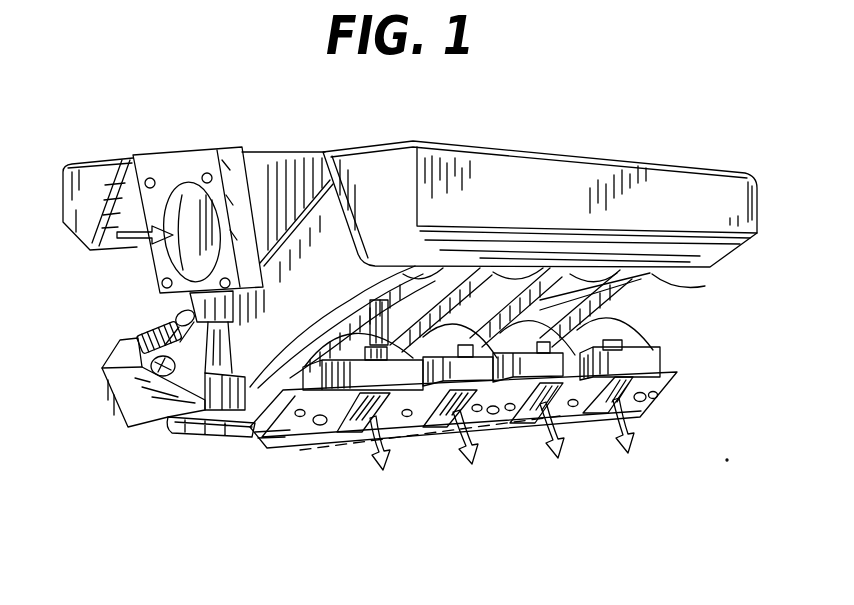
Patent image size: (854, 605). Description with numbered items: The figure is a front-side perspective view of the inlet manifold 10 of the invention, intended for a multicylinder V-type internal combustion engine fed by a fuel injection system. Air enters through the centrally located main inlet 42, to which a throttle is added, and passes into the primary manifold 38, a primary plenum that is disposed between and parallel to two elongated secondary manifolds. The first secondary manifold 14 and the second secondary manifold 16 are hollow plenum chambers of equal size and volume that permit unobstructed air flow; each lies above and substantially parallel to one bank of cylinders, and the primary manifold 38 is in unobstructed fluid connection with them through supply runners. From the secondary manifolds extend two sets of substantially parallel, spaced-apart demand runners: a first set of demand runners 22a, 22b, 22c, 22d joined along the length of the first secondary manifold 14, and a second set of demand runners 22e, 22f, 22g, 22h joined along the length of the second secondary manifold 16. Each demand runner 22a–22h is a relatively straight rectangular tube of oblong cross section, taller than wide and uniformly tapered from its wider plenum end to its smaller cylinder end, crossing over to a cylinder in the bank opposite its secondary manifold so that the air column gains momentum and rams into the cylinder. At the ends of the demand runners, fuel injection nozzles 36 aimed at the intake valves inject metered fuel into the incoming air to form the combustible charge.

The manifold 10 is at (647, 89).
The first secondary manifold 14 is at (112, 158).
The second secondary manifold 16 is at (540, 169).
The demand runner 22a is at (350, 428).
The demand runner 22b is at (437, 424).
The demand runner 22c is at (523, 419).
The demand runner 22d is at (603, 419).
The demand runner 22e is at (649, 274).
The demand runner 22f is at (618, 275).
The demand runner 22g is at (533, 275).
The demand runner 22h is at (402, 278).
The fuel injection nozzle 36 is at (353, 393).
The primary manifold 38 is at (297, 164).
The main inlet 42 is at (182, 253).